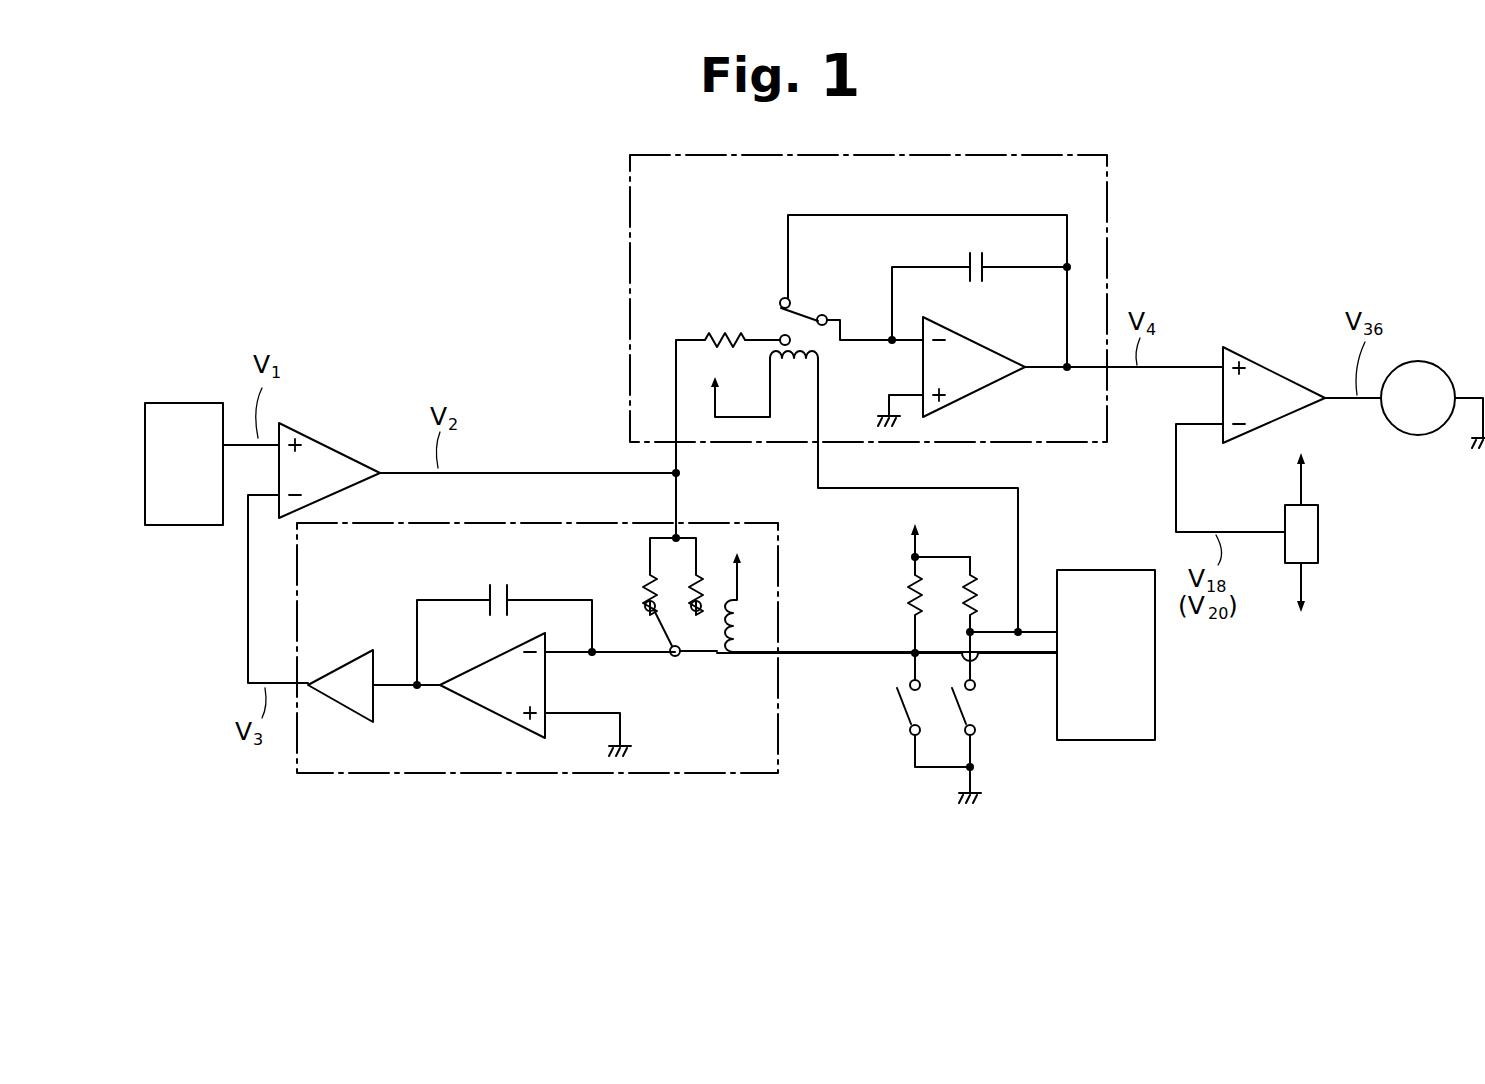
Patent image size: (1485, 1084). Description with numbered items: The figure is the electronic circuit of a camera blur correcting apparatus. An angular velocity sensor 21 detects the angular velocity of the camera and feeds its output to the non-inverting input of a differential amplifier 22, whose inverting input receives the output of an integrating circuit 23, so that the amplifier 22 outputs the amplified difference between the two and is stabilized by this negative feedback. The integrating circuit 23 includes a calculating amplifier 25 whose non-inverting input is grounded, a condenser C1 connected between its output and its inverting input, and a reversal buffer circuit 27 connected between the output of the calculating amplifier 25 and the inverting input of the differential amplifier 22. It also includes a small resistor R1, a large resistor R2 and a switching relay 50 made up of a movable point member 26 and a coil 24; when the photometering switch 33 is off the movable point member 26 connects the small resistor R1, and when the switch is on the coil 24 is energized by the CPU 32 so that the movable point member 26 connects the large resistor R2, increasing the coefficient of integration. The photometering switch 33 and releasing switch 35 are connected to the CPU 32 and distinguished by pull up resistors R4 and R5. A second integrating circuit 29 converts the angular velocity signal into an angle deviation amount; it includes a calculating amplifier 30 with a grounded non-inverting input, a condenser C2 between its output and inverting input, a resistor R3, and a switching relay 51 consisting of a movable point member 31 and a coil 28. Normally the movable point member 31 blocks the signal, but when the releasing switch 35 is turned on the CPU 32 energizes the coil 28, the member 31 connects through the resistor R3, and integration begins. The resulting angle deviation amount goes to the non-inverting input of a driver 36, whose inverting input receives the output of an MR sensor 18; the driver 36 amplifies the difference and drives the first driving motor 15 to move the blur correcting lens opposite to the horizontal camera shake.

The first driving motor 15 is at (1418, 362).
The MR sensor 18 is at (1322, 537).
The angular velocity sensor 21 is at (189, 403).
The differential amplifier 22 is at (328, 420).
The integrating circuit 23 is at (447, 777).
The coil 24 is at (730, 636).
The calculating amplifier 25 is at (471, 667).
The movable point member 26 is at (663, 624).
The reversal buffer circuit 27 is at (338, 663).
The coil 28 is at (794, 370).
The integrating circuit 29 is at (633, 258).
The calculating amplifier 30 is at (978, 384).
The movable point member 31 is at (810, 312).
The CPU 32 is at (1122, 746).
The photometering switch 33 is at (898, 708).
The releasing switch 35 is at (965, 706).
The driver 36 is at (1275, 368).
The switching relay 50 is at (700, 658).
The switching relay 51 is at (776, 301).
The small resistor R1 is at (648, 565).
The large resistor R2 is at (700, 555).
The resistor R3 is at (722, 332).
The pull up resistor R4 is at (905, 590).
The pull up resistor R5 is at (978, 590).
The condenser C1 is at (487, 593).
The condenser C2 is at (965, 260).